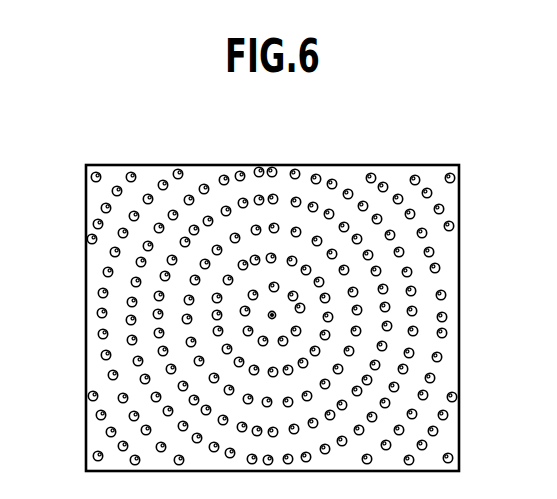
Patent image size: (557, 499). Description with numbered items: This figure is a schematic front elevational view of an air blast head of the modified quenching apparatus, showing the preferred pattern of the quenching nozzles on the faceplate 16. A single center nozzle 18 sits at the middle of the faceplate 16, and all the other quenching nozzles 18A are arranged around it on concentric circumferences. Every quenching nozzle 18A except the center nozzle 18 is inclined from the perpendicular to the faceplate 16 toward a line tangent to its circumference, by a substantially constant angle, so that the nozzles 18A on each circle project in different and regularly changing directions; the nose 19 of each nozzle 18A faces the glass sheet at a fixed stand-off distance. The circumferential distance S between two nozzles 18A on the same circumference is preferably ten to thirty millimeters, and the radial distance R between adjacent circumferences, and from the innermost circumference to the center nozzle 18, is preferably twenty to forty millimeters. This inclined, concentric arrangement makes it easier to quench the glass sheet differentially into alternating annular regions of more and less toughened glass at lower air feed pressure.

The faceplate 16 is at (447, 260).
The center nozzle 18 is at (276, 316).
The quenching nozzle 18A is at (350, 189).
The nose 19 is at (243, 171).
The radial distance R is at (133, 290).
The circumferential distance S is at (118, 334).